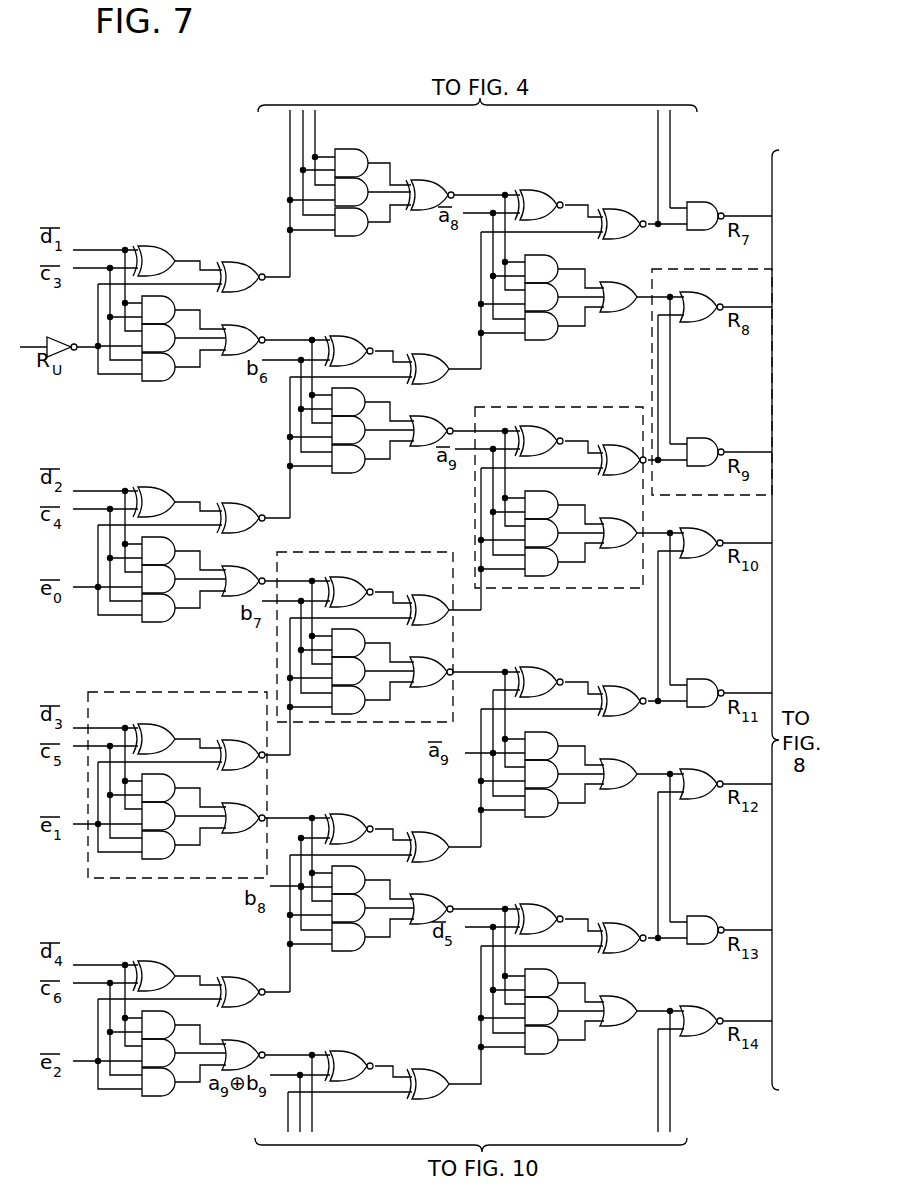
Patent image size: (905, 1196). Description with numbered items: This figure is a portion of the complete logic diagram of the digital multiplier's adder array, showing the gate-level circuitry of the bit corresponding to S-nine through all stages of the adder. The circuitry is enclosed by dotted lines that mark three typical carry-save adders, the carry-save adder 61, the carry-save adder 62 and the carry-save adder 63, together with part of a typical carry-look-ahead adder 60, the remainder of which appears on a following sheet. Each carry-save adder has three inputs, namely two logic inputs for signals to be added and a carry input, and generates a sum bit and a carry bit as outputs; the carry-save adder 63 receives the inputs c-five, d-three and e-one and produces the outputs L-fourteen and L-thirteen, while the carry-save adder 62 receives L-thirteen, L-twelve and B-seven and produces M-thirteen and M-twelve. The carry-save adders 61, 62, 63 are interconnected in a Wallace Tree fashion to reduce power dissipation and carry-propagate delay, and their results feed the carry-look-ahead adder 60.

The carry-look-ahead adder 60 is at (682, 269).
The carry-save adder 61 is at (557, 407).
The carry-save adder 62 is at (360, 552).
The carry-save adder 63 is at (177, 692).